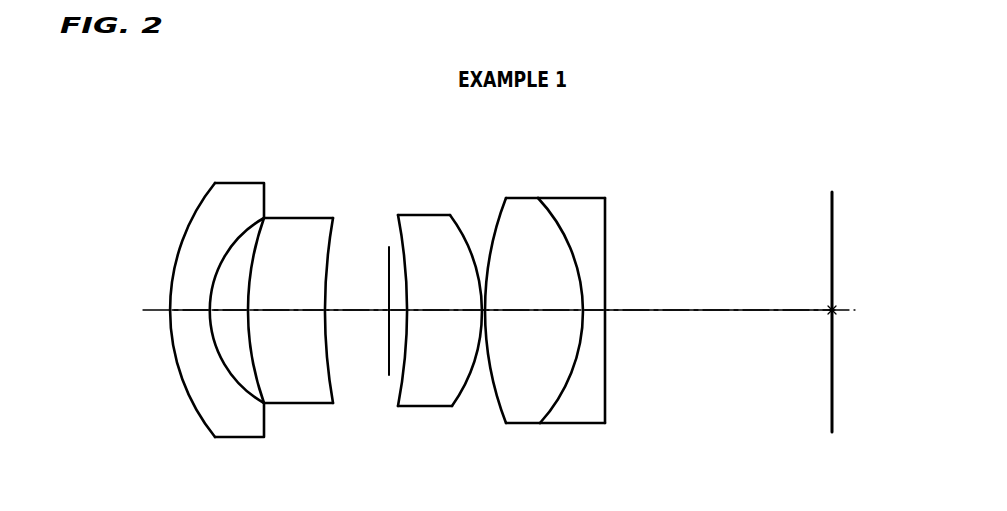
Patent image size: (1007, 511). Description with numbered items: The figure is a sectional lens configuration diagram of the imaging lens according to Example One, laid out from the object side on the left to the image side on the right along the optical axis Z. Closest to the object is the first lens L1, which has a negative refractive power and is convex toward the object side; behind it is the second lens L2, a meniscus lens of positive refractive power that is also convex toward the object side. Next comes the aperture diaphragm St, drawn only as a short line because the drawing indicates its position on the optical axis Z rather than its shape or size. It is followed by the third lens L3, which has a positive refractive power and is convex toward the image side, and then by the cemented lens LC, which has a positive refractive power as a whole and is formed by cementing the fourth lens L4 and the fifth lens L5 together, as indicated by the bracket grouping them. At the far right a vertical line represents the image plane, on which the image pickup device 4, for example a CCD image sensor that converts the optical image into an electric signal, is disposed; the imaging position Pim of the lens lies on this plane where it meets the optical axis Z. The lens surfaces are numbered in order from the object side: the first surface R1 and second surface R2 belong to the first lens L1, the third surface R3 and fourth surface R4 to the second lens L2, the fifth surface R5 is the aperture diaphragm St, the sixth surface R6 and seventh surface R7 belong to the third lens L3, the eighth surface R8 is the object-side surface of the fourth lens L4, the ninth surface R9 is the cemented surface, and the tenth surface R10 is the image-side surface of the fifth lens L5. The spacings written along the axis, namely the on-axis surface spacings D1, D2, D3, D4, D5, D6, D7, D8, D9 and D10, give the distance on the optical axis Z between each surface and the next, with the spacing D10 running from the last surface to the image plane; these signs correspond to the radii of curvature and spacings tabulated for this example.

The optical axis Z is at (153, 305).
The first lens L1 is at (214, 302).
The second lens L2 is at (297, 302).
The third lens L3 is at (440, 302).
The fourth lens L4 is at (512, 320).
The fifth lens L5 is at (590, 320).
The cemented lens LC is at (563, 303).
The aperture diaphragm St is at (378, 335).
The imaging position Pim is at (836, 306).
The image pickup device 4 is at (836, 384).
The first surface R1 is at (197, 413).
The second surface R2 is at (242, 388).
The third surface R3 is at (265, 385).
The fourth surface R4 is at (333, 372).
The fifth surface R5 is at (386, 378).
The sixth surface R6 is at (413, 386).
The seventh surface R7 is at (458, 392).
The eighth surface R8 is at (498, 400).
The ninth surface R9 is at (560, 390).
The tenth surface R10 is at (607, 414).
The on-axis surface spacing D1 is at (190, 302).
The on-axis surface spacing D2 is at (230, 302).
The on-axis surface spacing D3 is at (286, 302).
The on-axis surface spacing D4 is at (357, 302).
The on-axis surface spacing D5 is at (397, 306).
The on-axis surface spacing D6 is at (444, 302).
The on-axis surface spacing D7 is at (483, 296).
The on-axis surface spacing D8 is at (534, 302).
The on-axis surface spacing D9 is at (587, 306).
The on-axis surface spacing D10 is at (718, 302).